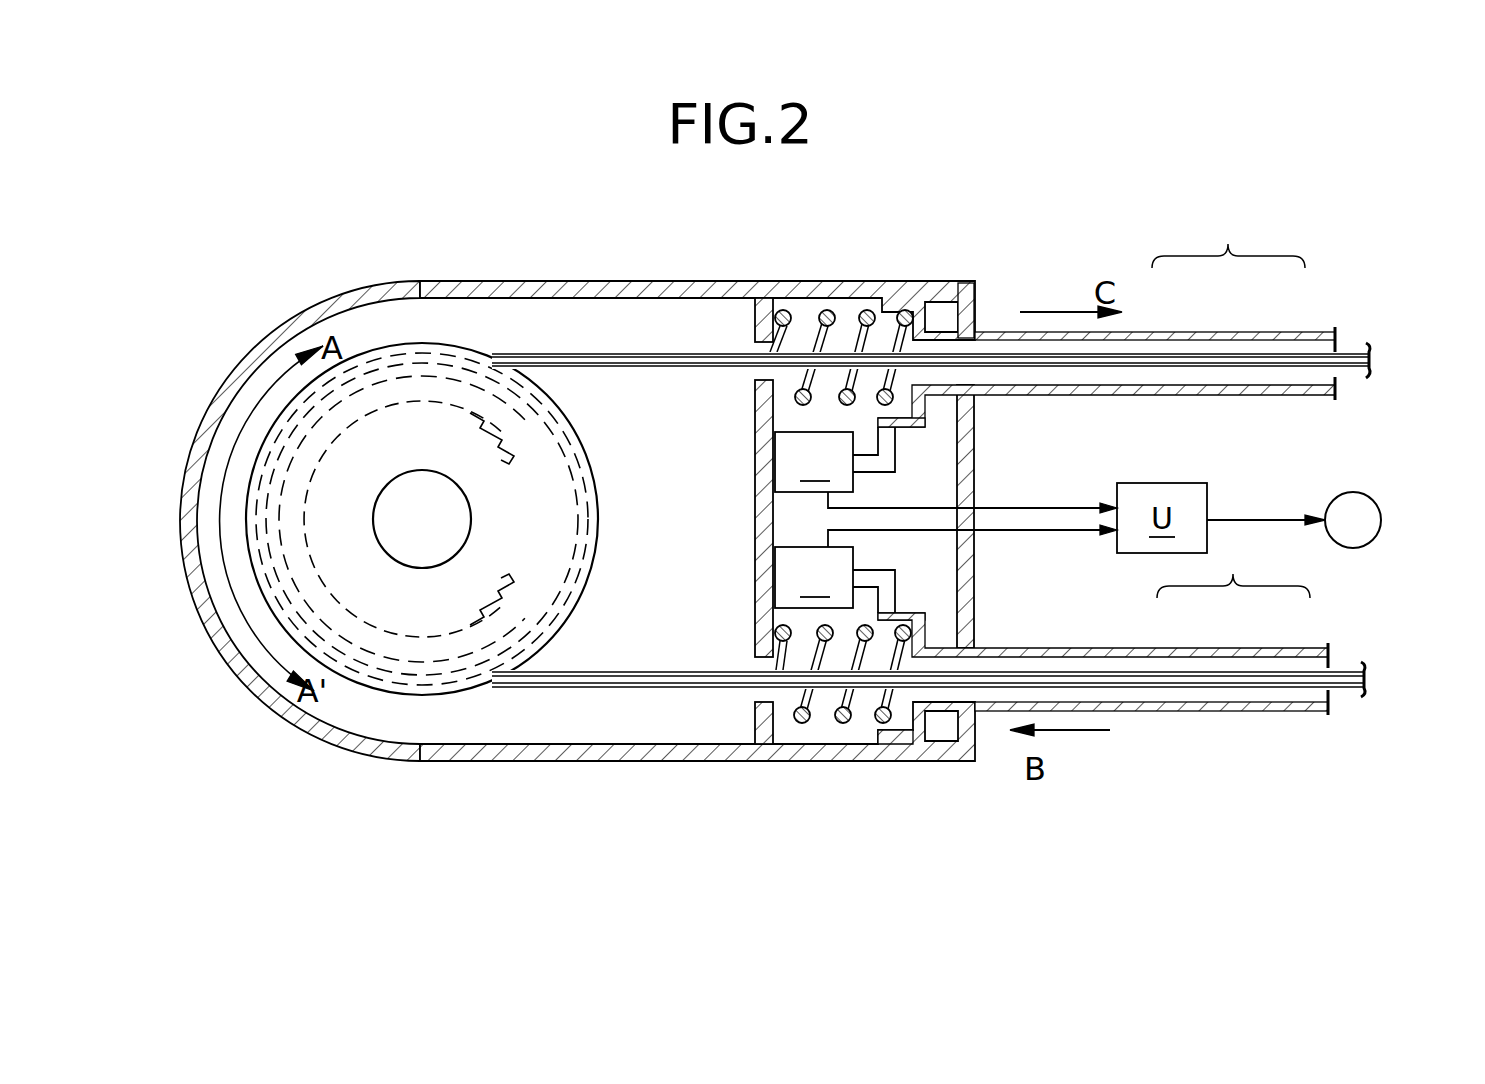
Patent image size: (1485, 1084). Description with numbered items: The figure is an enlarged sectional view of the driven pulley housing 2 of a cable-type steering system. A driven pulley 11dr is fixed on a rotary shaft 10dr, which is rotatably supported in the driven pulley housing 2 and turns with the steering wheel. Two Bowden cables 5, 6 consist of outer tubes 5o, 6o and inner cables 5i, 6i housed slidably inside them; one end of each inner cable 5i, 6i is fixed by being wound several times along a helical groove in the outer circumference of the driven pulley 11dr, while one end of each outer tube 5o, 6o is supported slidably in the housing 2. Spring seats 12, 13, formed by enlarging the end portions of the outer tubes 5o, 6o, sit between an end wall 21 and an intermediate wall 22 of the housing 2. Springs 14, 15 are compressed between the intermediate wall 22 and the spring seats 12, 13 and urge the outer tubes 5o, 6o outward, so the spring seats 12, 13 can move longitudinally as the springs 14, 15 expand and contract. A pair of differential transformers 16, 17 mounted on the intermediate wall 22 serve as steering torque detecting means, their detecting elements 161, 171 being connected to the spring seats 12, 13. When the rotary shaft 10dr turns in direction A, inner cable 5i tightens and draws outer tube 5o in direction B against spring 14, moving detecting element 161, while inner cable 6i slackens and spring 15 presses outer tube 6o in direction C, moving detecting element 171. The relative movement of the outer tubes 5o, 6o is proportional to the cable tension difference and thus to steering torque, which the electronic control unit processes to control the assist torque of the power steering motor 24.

The driven pulley housing 2 is at (662, 256).
The end wall 21 is at (974, 313).
The intermediate wall 22 is at (762, 406).
The driven pulley 11dr is at (558, 500).
The rotary shaft 10dr is at (428, 538).
The spring 15 is at (827, 310).
The spring seat 13 is at (893, 308).
The Bowden cable 6 is at (1228, 234).
The inner cable 6i is at (1135, 362).
The outer tube 6o is at (1254, 333).
The differential transformer 17 is at (946, 470).
The detecting element 171 is at (885, 447).
The differential transformer 16 is at (946, 569).
The detecting element 161 is at (885, 593).
The power steering motor 24 is at (1365, 495).
The spring 14 is at (802, 724).
The spring seat 12 is at (908, 745).
The Bowden cable 5 is at (1233, 570).
The inner cable 5i is at (1123, 677).
The outer tube 5o is at (1232, 650).